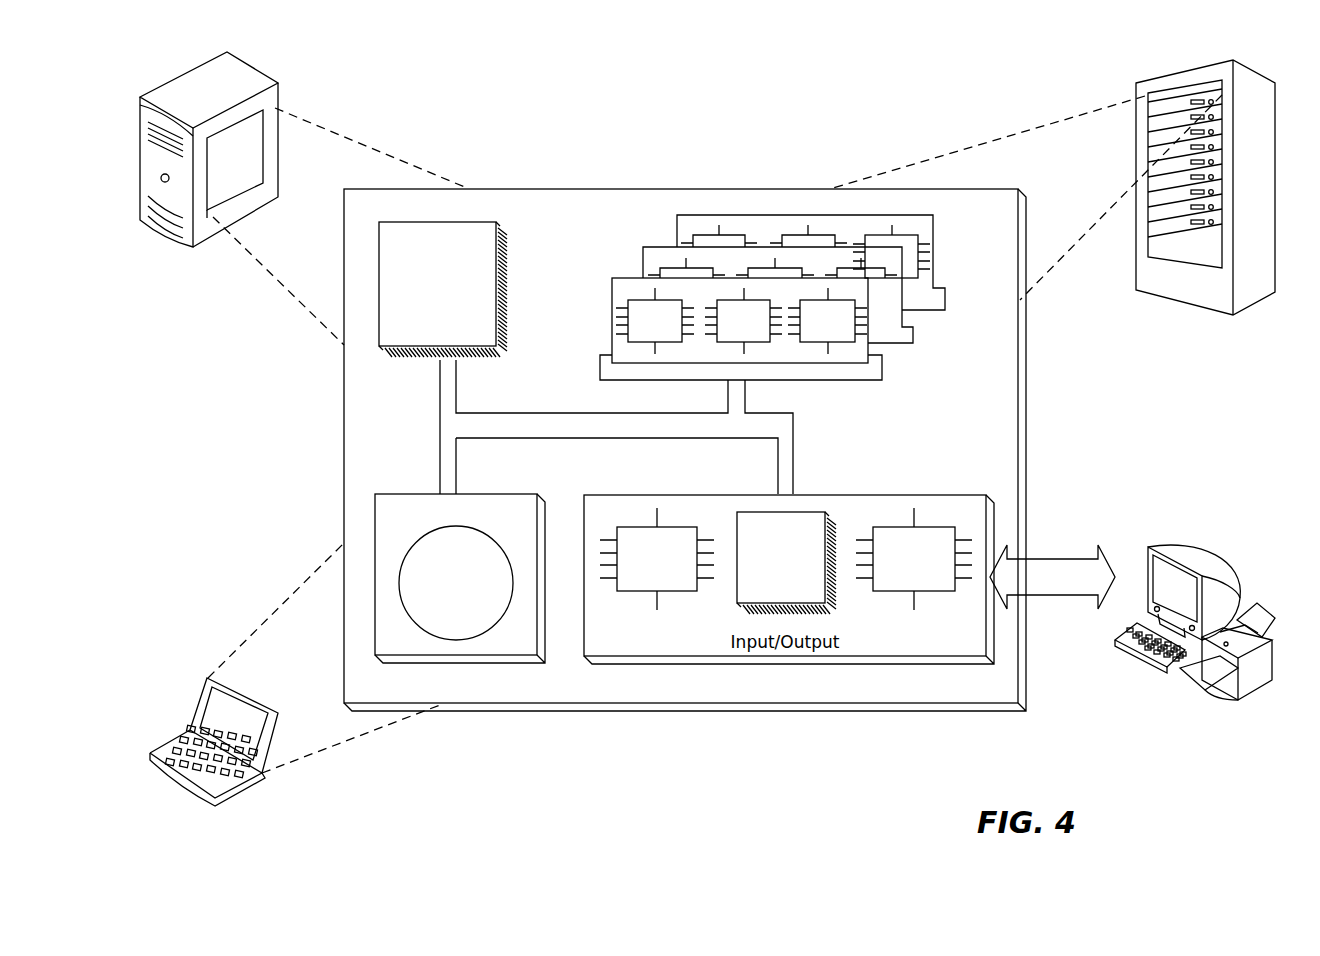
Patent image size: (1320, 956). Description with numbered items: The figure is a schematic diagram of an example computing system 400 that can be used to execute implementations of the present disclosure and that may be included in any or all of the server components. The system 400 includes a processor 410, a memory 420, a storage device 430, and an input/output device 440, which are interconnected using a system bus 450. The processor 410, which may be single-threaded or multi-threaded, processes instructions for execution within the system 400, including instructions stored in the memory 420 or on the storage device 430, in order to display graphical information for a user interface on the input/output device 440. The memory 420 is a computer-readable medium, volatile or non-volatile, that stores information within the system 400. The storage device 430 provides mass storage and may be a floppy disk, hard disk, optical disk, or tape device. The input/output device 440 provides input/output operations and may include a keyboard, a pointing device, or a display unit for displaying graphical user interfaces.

The computing system 400 is at (523, 119).
The processor 410 is at (486, 343).
The memory 420 is at (938, 345).
The storage device 430 is at (526, 652).
The input/output device 440 is at (1148, 548).
The system bus 450 is at (612, 430).